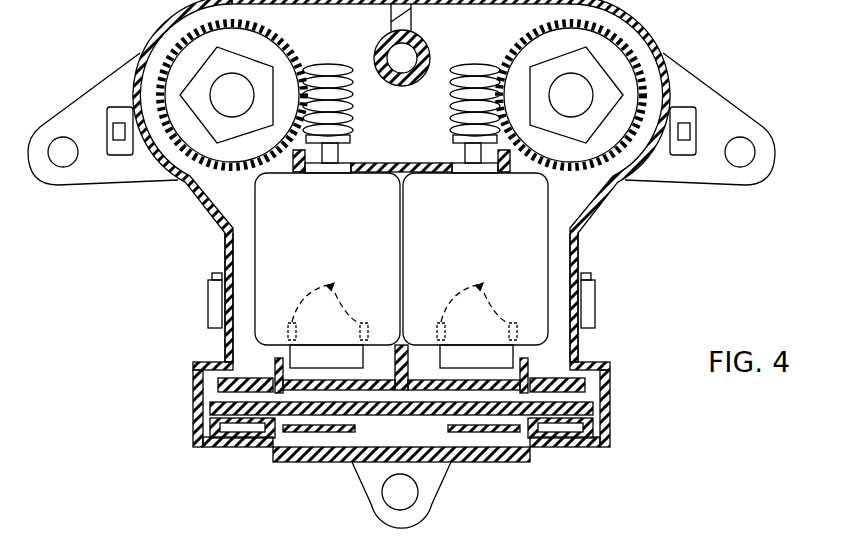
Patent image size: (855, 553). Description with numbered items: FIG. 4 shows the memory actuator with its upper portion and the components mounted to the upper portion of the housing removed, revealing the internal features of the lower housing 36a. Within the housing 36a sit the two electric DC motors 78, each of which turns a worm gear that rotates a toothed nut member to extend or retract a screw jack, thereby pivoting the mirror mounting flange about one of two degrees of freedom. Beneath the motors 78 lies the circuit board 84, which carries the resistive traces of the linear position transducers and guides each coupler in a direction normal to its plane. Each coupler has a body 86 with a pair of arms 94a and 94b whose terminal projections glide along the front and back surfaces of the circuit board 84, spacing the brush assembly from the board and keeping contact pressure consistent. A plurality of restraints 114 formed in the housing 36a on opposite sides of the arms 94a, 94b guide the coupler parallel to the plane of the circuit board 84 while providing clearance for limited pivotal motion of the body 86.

The housing 36a is at (596, 212).
The electric DC motor 78 is at (255, 218).
The body 86 is at (402, 301).
The arm 94a is at (197, 362).
The arm 94b is at (218, 428).
The circuit board 84 is at (589, 411).
The restraints 114 is at (223, 336).